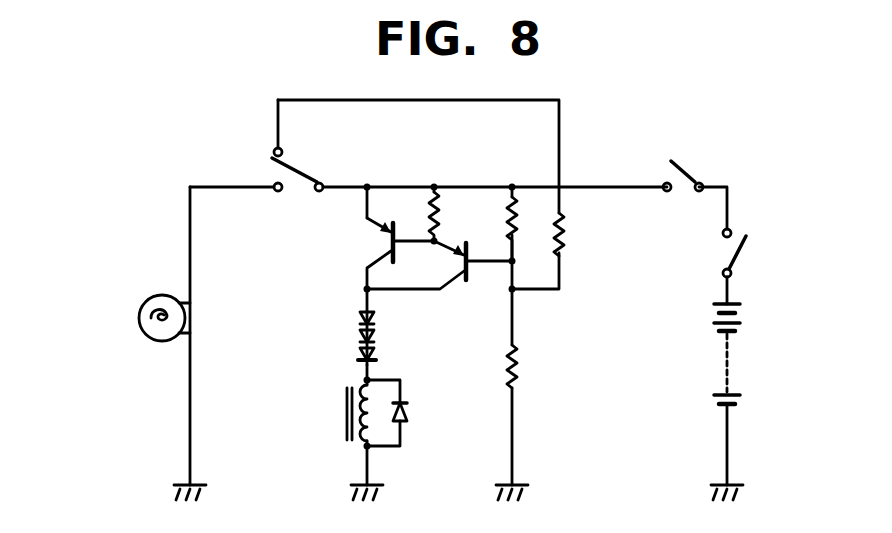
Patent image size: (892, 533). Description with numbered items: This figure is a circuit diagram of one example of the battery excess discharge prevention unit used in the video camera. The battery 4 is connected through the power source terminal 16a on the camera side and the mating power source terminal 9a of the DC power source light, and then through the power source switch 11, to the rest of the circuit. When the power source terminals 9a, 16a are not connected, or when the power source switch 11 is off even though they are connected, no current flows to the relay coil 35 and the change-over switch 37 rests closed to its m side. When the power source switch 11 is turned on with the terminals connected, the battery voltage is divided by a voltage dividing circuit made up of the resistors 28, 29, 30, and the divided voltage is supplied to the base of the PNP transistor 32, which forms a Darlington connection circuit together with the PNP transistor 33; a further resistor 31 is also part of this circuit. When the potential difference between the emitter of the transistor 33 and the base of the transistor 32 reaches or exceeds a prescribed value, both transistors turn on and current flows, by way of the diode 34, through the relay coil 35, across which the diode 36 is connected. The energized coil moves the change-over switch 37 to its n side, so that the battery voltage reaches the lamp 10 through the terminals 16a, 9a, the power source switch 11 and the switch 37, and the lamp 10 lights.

The lamp 10 is at (162, 297).
The change-over switch 37 is at (300, 189).
The PNP-type transistor 33 is at (378, 215).
The PNP-type transistor 32 is at (472, 270).
The resistor 31 is at (440, 213).
The resistor 29 is at (521, 196).
The resistor 28 is at (564, 210).
The resistor 30 is at (521, 365).
The diode 34 is at (378, 356).
The relay coil 35 is at (343, 412).
The diode 36 is at (410, 411).
The power source switch 11 is at (687, 173).
The power source terminal 9a is at (723, 232).
The power source terminal 16a is at (722, 273).
The battery 4 is at (725, 360).